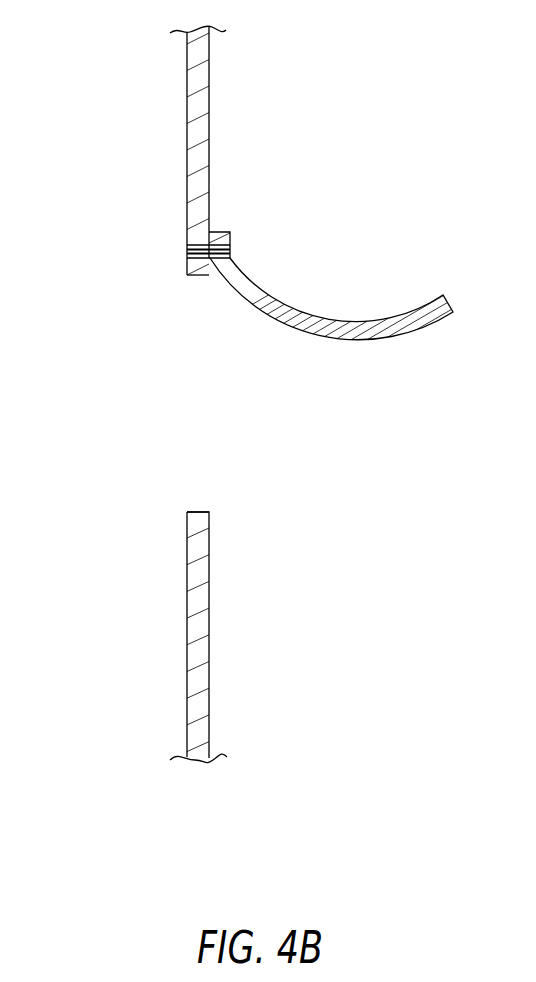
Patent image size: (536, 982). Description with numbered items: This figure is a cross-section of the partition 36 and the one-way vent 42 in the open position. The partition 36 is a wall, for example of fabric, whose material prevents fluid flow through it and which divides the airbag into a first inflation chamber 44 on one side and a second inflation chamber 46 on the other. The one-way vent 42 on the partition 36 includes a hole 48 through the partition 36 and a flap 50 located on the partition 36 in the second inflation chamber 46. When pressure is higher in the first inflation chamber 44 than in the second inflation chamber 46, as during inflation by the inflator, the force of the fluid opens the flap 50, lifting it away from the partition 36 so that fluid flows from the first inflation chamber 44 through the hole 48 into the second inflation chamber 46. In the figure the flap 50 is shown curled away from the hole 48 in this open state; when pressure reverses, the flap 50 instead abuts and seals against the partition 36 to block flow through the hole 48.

The partition 36 is at (187, 662).
The one-way vent 42 is at (263, 538).
The first inflation chamber 44 is at (109, 285).
The second inflation chamber 46 is at (325, 482).
The hole 48 is at (198, 512).
The flap 50 is at (353, 318).